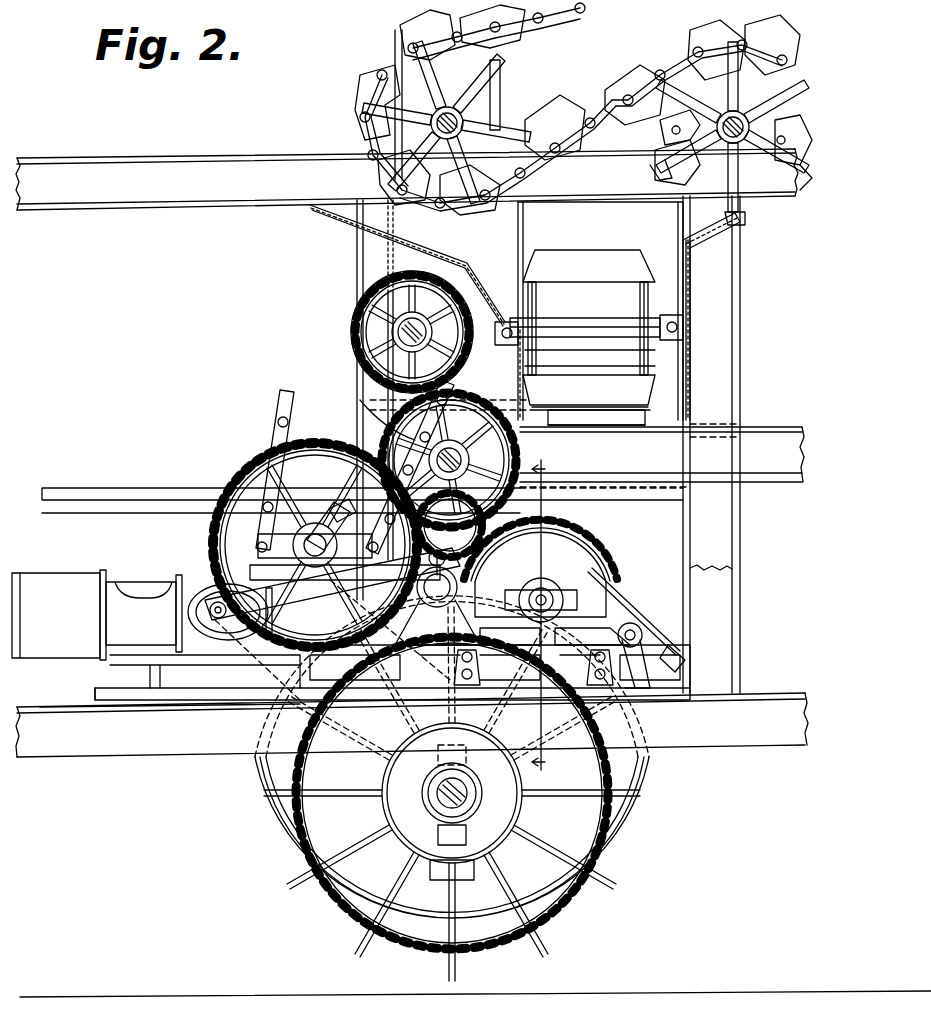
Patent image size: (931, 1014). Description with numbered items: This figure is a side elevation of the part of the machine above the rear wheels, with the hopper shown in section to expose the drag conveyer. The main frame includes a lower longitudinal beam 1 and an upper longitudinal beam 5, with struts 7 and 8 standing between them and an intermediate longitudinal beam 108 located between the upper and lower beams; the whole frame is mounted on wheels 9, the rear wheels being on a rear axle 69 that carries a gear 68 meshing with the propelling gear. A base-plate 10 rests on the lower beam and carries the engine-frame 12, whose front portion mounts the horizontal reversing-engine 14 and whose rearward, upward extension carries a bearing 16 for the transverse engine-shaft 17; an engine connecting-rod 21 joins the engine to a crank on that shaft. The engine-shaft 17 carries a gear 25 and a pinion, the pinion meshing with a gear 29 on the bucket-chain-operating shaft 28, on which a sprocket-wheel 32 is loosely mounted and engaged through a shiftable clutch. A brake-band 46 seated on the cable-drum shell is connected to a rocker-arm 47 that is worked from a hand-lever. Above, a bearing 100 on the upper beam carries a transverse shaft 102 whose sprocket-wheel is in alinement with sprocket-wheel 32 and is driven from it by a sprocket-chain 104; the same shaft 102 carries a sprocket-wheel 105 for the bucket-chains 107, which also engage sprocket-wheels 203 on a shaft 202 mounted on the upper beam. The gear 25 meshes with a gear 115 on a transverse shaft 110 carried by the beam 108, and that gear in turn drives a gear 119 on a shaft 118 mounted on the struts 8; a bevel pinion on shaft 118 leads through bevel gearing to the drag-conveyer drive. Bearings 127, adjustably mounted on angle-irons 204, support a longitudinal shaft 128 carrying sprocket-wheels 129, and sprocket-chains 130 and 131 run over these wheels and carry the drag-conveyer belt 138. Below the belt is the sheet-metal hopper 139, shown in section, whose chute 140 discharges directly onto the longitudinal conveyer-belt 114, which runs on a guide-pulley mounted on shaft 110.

The longitudinal beam 1 is at (166, 745).
The longitudinal beam 5 is at (178, 170).
The strut 7 is at (740, 356).
The strut 8 is at (357, 262).
The wheel 9 is at (262, 838).
The base-plate 10 is at (52, 706).
The engine-frame 12 is at (240, 688).
The horizontal reversing-engine 14 is at (142, 615).
The bearing 16 is at (437, 598).
The engine-shaft 17 is at (396, 588).
The engine connecting-rod 21 is at (337, 585).
The gear 25 is at (450, 525).
The bucket-chain-operating shaft 28 is at (322, 545).
The gear 29 is at (322, 446).
The sprocket-wheel 32 is at (326, 504).
The brake-band 46 is at (572, 542).
The rocker-arm 47 is at (641, 626).
The gear 68 is at (300, 855).
The rear axle 69 is at (478, 800).
The bearing 100 is at (382, 32).
The shaft 102 is at (462, 118).
The sprocket-chain 104 is at (282, 404).
The sprocket-wheel 105 is at (505, 128).
The bucket-chain 107 is at (641, 88).
The longitudinal beam 108 is at (137, 490).
The shaft 110 is at (504, 436).
The longitudinal conveyer-belt 114 is at (747, 428).
The gear 115 is at (388, 412).
The shaft 118 is at (398, 334).
The gear 119 is at (352, 318).
The bearing 127 is at (507, 318).
The shaft 128 is at (586, 320).
The sprocket-wheel 129 is at (538, 318).
The sprocket-chain 130 is at (538, 280).
The sprocket-chain 131 is at (665, 283).
The drag-conveyer belt 138 is at (589, 330).
The hopper 139 is at (593, 412).
The chute 140 is at (554, 412).
The shaft 202 is at (718, 126).
The sprocket-wheel 203 is at (711, 105).
The angle-iron 204 is at (590, 369).